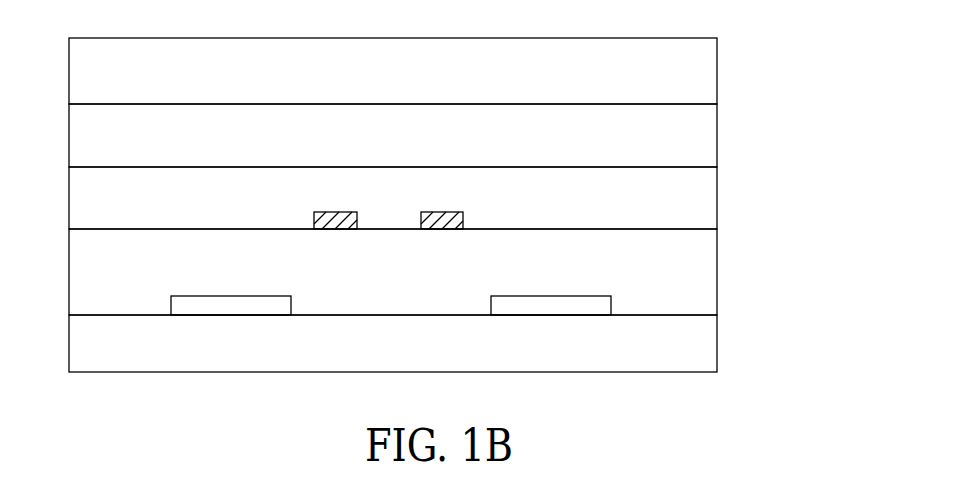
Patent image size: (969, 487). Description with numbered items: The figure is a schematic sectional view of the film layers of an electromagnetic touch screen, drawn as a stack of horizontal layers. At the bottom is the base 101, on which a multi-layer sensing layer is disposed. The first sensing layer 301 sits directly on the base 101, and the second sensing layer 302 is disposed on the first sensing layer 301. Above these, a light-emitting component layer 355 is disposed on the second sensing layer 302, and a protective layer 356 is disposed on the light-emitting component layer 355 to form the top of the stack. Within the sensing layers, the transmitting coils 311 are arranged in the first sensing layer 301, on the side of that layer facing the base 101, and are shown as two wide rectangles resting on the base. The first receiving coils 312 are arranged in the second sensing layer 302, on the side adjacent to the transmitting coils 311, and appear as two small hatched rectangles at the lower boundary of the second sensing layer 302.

The base 101 is at (712, 347).
The first sensing layer 301 is at (703, 278).
The second sensing layer 302 is at (702, 207).
The transmitting coils 311 is at (545, 305).
The first receiving coils 312 is at (444, 211).
The light-emitting component layer 355 is at (703, 137).
The protective layer 356 is at (705, 77).